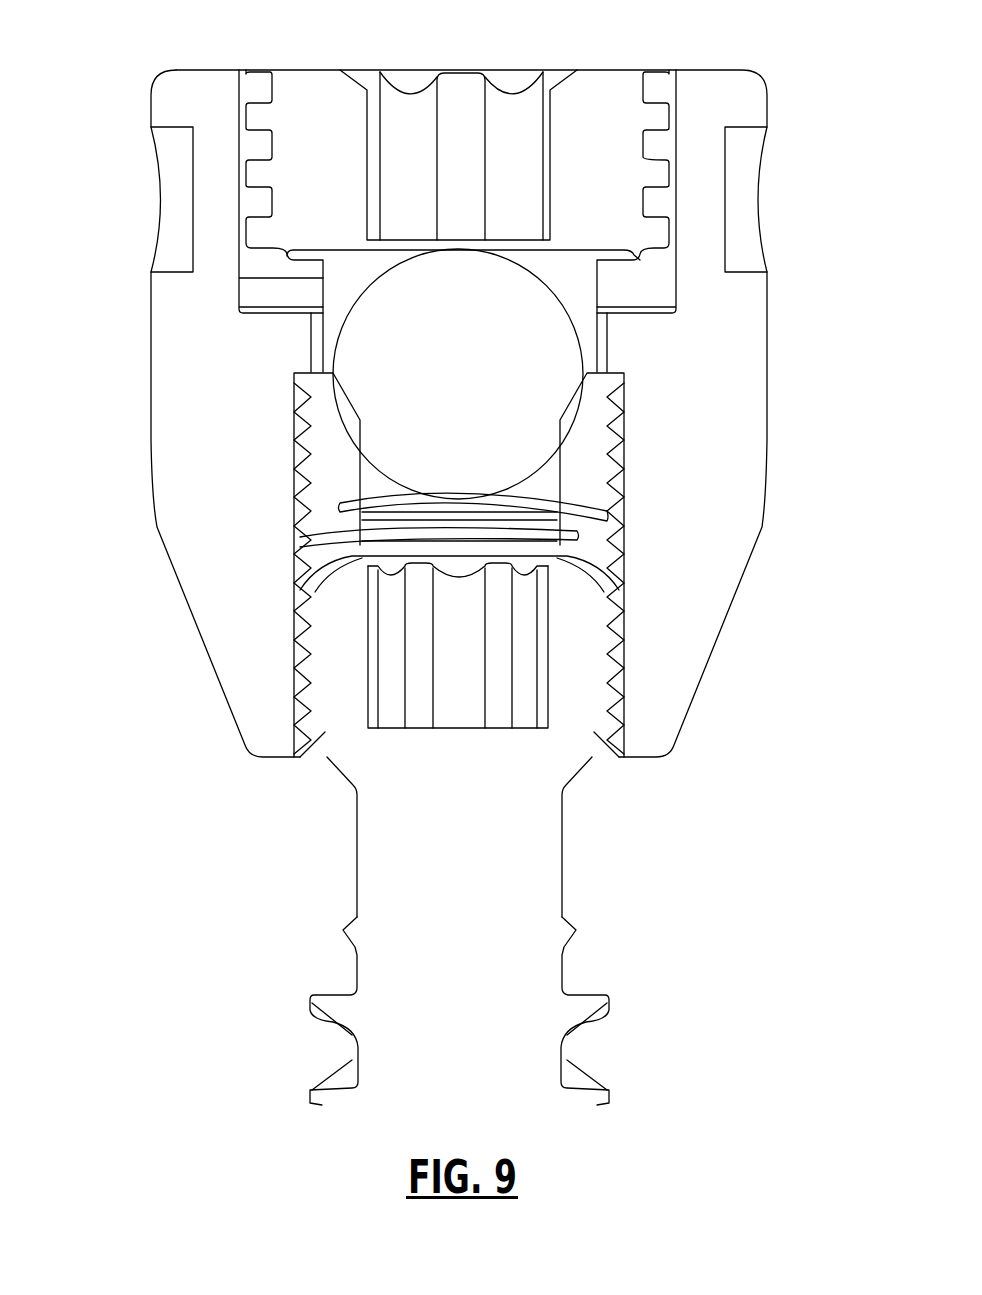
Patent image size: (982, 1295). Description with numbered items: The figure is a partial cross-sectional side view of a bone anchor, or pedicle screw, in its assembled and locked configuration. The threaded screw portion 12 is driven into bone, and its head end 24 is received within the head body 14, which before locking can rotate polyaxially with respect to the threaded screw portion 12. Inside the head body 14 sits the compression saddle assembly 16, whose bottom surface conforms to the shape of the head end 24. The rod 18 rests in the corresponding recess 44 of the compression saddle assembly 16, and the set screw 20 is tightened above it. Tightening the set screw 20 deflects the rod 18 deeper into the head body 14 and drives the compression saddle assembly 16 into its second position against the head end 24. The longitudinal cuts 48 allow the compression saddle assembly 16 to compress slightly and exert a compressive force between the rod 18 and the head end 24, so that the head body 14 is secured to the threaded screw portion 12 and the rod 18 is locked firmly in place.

The threaded screw portion 12 is at (588, 987).
The head body 14 is at (766, 419).
The compression saddle assembly 16 is at (615, 447).
The rod 18 is at (558, 295).
The set screw 20 is at (605, 68).
The head end 24 is at (578, 762).
The recess 44 is at (406, 374).
The longitudinal cuts 48 is at (362, 491).